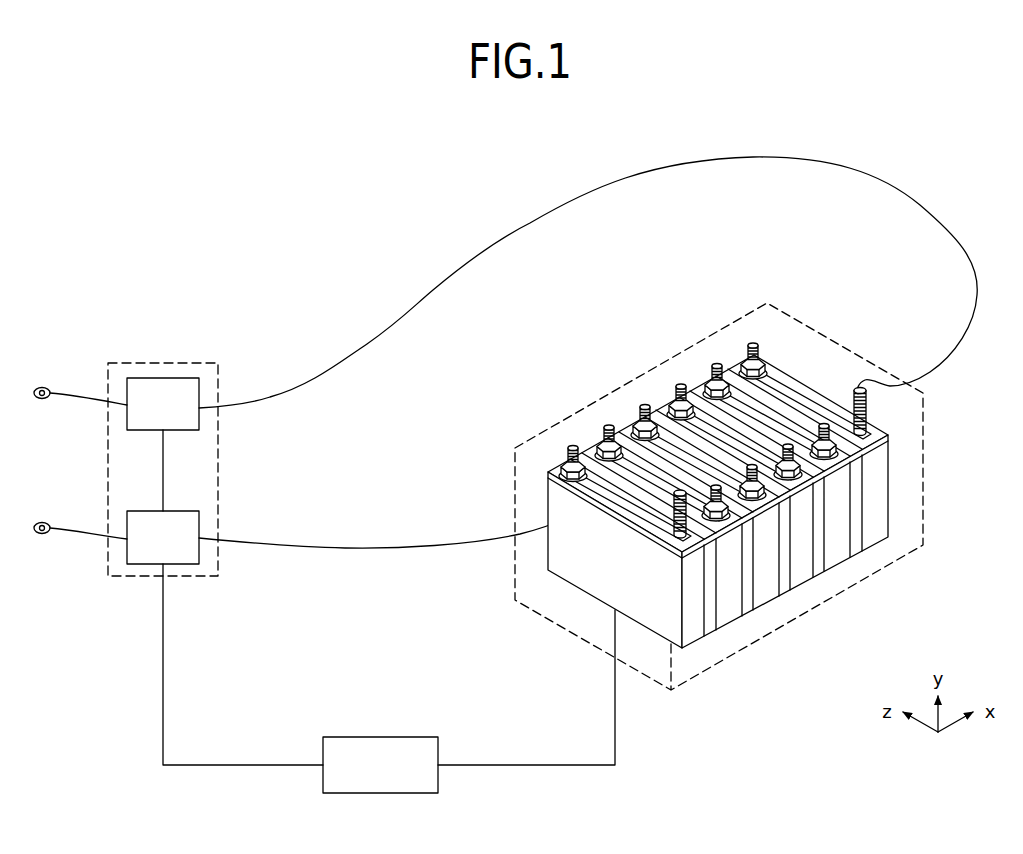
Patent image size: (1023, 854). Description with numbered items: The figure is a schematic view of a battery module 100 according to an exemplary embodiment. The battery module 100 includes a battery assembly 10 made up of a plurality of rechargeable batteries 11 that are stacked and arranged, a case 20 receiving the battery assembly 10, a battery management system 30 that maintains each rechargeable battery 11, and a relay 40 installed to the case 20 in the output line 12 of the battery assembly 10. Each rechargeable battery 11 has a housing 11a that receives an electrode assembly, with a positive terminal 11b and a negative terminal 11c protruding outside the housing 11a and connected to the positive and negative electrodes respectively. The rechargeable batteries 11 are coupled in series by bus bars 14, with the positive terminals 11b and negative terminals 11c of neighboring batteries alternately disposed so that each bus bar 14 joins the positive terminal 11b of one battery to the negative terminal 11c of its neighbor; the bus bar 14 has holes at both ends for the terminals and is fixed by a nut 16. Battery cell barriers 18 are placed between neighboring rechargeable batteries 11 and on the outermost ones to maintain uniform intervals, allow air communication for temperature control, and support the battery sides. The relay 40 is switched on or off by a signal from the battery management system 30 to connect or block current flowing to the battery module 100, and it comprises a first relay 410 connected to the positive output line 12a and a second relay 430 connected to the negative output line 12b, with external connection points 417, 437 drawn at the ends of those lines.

The battery module 100 is at (594, 338).
The battery assembly 10 is at (697, 476).
The rechargeable battery 11 is at (697, 466).
The housing 11a is at (817, 380).
The positive terminal 11b is at (697, 418).
The negative terminal 11c is at (770, 347).
The output line 12 is at (588, 352).
The positive output line 12a is at (318, 375).
The negative output line 12b is at (333, 547).
The bus bar 14 is at (733, 347).
The nut 16 is at (703, 370).
The battery cell barrier 18 is at (747, 573).
The case 20 is at (683, 353).
The battery management system 30 is at (380, 737).
The relay 40 is at (159, 461).
The first relay 410 is at (146, 378).
The second relay 430 is at (146, 564).
The first external terminal 417 is at (44, 385).
The second external terminal 437 is at (44, 520).